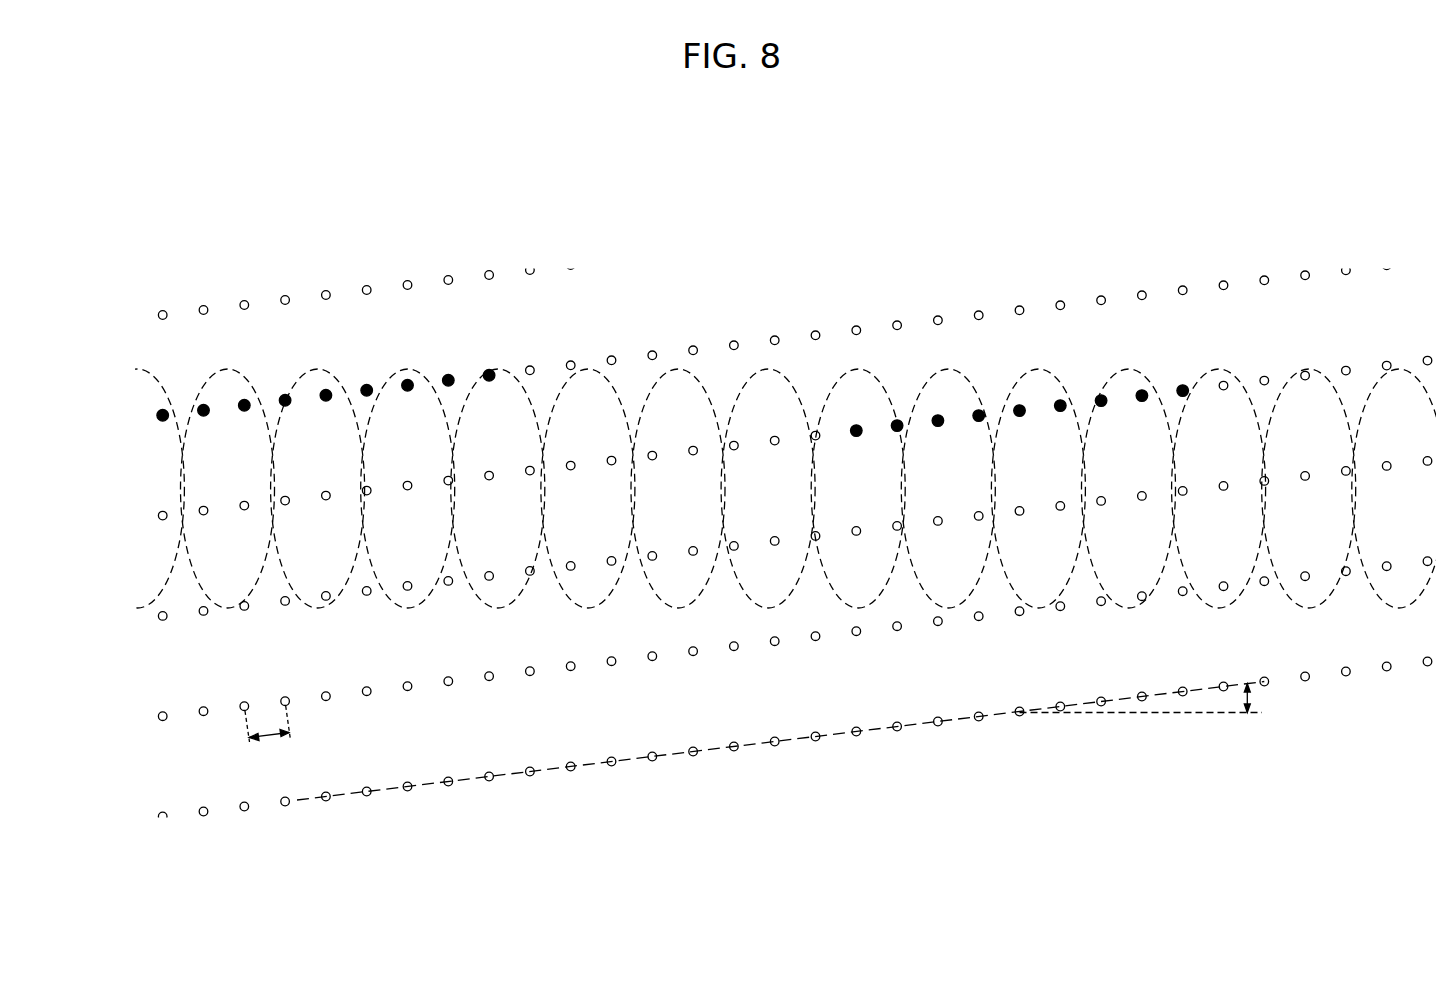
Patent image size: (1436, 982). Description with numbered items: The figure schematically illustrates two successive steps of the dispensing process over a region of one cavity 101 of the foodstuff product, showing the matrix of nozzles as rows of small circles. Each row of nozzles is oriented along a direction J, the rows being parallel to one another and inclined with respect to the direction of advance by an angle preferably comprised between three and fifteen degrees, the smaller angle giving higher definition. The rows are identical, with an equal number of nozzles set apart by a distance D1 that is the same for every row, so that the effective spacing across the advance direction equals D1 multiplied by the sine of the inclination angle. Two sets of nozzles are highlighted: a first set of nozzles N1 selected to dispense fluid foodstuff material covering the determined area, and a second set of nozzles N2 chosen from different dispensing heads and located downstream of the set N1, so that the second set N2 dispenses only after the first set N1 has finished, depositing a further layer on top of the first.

The cavity 101 is at (418, 612).
The first set of nozzles N1 is at (306, 388).
The second set of nozzles N2 is at (949, 404).
The direction of row of nozzles J is at (552, 770).
The distance between nozzles D1 is at (270, 737).